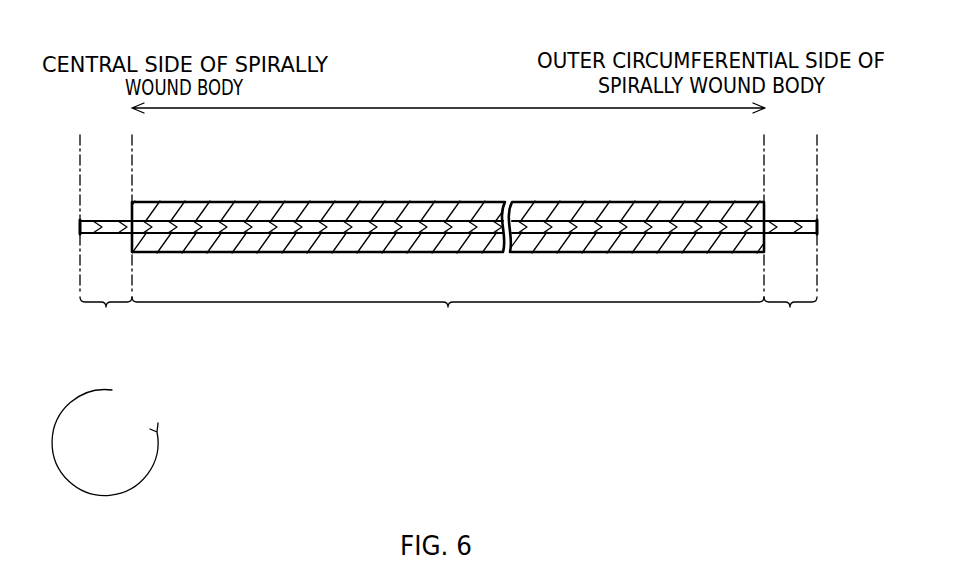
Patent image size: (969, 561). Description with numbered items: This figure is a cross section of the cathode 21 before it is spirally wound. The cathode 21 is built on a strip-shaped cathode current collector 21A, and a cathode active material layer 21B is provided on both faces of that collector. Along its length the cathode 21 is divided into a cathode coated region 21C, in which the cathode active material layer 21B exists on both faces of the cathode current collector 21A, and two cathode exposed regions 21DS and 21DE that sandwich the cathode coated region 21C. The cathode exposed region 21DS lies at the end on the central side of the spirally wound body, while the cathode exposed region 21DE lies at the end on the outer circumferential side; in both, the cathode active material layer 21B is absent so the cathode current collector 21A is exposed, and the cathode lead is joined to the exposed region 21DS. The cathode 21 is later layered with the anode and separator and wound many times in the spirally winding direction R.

The cathode 21 is at (454, 75).
The cathode current collector 21A is at (421, 225).
The cathode active material layer 21B is at (553, 240).
The cathode coated region 21C is at (448, 318).
The cathode exposed region on the central side 21DS is at (106, 237).
The cathode exposed region on the outer circumferential side 21DE is at (790, 237).
The spirally winding direction R is at (148, 473).